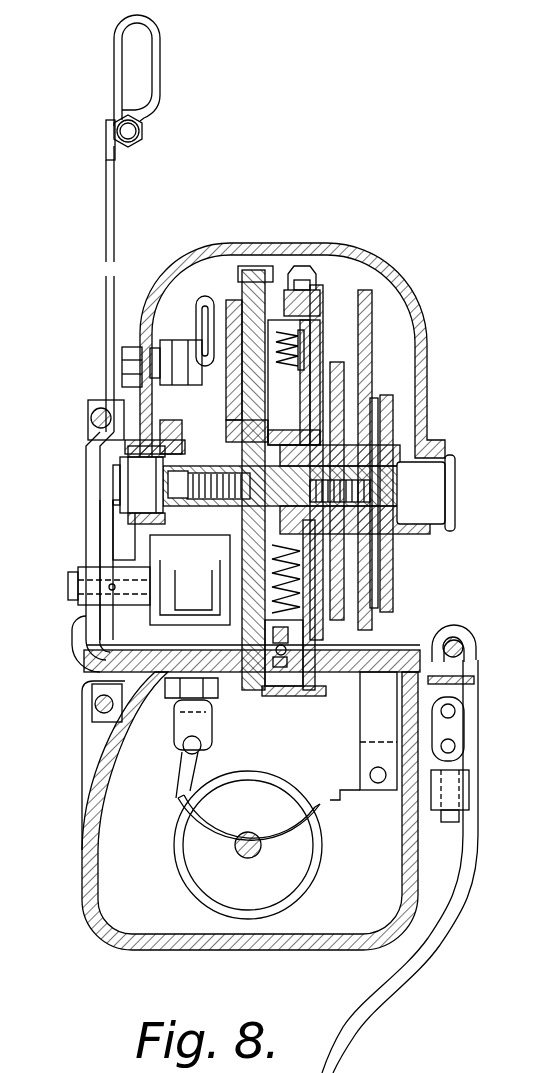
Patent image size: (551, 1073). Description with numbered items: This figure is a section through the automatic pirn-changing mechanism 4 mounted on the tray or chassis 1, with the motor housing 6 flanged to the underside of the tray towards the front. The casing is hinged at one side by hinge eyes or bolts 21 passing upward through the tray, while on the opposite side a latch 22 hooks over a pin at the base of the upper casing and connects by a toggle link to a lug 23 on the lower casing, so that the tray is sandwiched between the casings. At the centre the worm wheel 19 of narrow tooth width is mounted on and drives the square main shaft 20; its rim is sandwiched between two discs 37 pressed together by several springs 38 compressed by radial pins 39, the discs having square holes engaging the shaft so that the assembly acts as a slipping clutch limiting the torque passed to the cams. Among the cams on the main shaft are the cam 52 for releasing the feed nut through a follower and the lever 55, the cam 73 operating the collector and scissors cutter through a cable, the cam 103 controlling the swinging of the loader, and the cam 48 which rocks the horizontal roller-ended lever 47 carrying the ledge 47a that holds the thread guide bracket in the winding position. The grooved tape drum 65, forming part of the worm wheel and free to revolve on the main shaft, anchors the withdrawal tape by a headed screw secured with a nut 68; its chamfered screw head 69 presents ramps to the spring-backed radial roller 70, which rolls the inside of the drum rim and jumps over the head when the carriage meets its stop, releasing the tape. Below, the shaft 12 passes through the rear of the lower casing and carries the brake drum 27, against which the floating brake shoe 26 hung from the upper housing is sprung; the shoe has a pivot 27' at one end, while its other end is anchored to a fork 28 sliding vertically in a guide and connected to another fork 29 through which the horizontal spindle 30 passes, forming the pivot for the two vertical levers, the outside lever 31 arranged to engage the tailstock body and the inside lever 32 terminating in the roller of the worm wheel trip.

The tray or chassis 1 is at (84, 636).
The automatic mechanism 4 is at (350, 248).
The housing 6 is at (418, 864).
The shaft 12 is at (261, 845).
The worm wheel 19 is at (258, 268).
The square shaft 20 is at (284, 489).
The hinge eyes or bolts 21 is at (96, 705).
The latch 22 is at (478, 648).
The lug 23 is at (462, 690).
The shoe 26 is at (326, 803).
The drum 27 is at (221, 845).
The pivot 27' is at (219, 791).
The fork 28 is at (176, 717).
The fork 29 is at (180, 648).
The spindle 30 is at (140, 583).
The lever 31 is at (105, 308).
The lever 32 is at (200, 562).
The discs 37 is at (262, 372).
The springs 38 is at (300, 342).
The pins 39 is at (240, 336).
The lever 47 is at (200, 352).
The ledge 47a is at (255, 420).
The cam 48 is at (172, 432).
The cam 52 is at (344, 372).
The lever 55 is at (112, 527).
The drum 65 is at (316, 690).
The nut 68 is at (292, 268).
The screw head 69 is at (300, 325).
The roller 70 is at (290, 688).
The cam 73 is at (372, 300).
The cam 103 is at (394, 410).